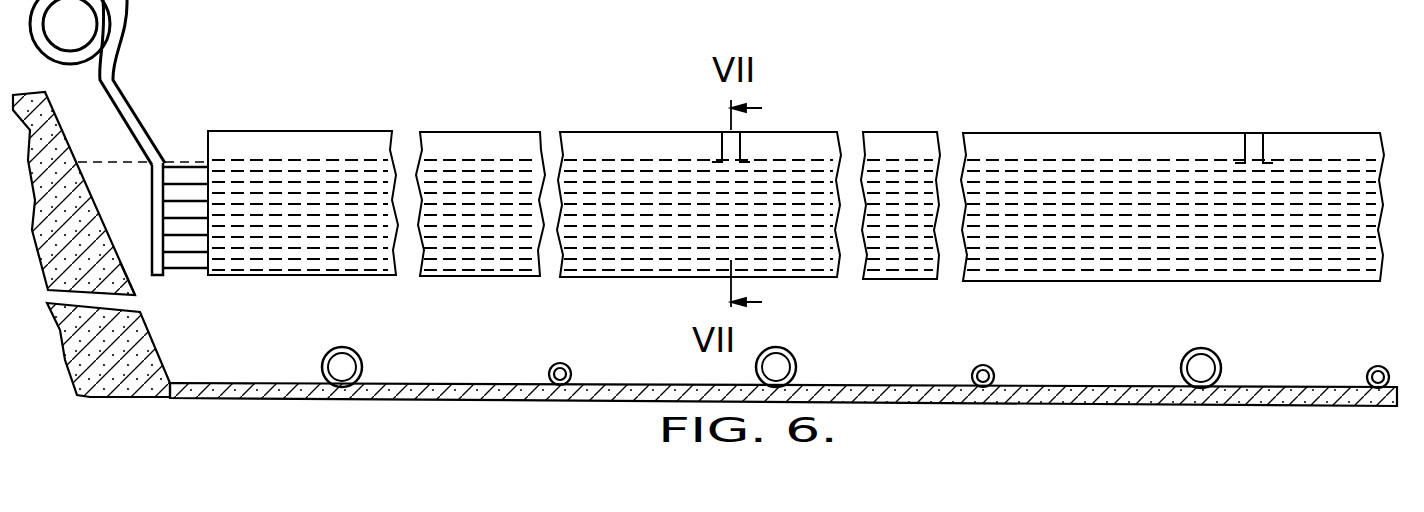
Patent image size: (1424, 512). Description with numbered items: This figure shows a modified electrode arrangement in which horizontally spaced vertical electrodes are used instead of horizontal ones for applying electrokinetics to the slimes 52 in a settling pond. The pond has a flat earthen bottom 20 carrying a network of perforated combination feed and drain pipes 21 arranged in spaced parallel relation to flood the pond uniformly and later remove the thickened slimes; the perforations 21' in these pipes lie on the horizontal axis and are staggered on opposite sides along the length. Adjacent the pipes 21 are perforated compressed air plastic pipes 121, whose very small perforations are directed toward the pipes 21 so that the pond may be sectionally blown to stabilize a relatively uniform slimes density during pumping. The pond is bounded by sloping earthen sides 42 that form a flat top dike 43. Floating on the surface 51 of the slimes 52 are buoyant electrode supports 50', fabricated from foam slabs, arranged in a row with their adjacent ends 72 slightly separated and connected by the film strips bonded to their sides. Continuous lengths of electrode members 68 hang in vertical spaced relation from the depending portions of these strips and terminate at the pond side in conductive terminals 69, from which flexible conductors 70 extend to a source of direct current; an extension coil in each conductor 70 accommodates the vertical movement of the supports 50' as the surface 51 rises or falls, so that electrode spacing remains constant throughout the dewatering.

The flat earthen bottom 20 is at (252, 390).
The perforated combination feed and drain pipes 21 is at (798, 356).
The perforations 21' is at (746, 361).
The perforated compressed air plastic pipes 121 is at (554, 368).
The sloping earthen sides 42 is at (132, 290).
The flat top dikes 43 is at (30, 91).
The buoyant electrode supports 50' is at (796, 180).
The surface of the slimes 51 is at (120, 161).
The slimes 52 is at (305, 315).
The electrode members 68 is at (186, 195).
The conductive terminals 69 is at (152, 213).
The flexible conductors 70 is at (133, 105).
The adjacent ends of the supports 72 is at (722, 140).